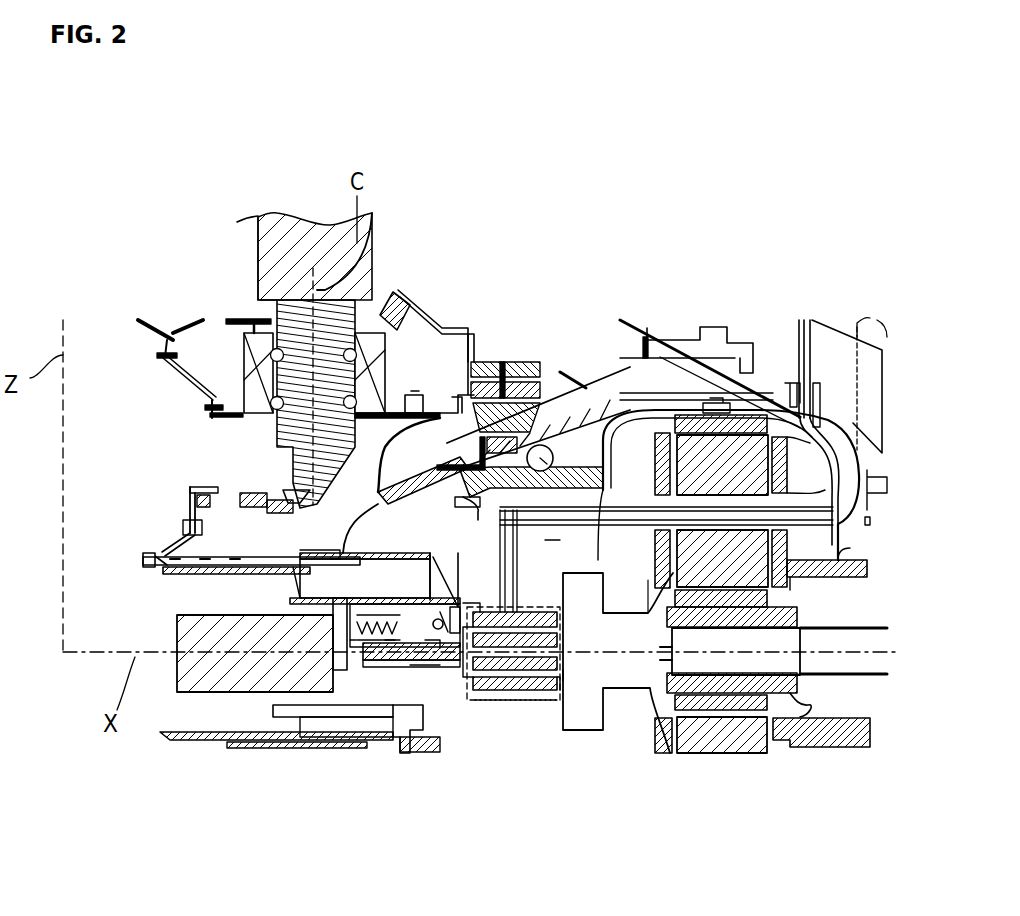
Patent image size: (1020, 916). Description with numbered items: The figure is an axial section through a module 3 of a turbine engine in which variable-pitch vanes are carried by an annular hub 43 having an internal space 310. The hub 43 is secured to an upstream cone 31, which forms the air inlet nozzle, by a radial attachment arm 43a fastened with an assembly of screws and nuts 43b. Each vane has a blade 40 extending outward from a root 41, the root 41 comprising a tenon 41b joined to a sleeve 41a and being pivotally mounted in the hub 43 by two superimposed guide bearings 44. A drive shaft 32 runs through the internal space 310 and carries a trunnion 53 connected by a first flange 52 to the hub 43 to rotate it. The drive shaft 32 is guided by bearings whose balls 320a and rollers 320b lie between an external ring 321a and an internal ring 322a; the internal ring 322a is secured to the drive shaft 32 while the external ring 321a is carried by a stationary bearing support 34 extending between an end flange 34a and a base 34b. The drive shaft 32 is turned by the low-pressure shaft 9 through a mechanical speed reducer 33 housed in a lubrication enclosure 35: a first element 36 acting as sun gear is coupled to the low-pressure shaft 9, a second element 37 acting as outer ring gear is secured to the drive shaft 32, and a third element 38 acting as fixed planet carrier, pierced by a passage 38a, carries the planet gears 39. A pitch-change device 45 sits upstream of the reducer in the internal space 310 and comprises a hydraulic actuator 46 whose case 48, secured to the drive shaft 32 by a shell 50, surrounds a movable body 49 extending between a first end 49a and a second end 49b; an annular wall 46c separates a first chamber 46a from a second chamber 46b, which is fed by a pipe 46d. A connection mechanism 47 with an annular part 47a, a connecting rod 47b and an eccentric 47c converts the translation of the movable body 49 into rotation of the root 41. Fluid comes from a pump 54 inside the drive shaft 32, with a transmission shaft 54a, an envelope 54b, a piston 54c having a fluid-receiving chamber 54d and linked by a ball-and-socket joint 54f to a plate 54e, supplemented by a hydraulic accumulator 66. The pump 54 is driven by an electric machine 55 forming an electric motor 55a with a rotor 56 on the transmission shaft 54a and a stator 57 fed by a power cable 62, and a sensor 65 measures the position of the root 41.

The module 3 is at (123, 178).
The low-pressure shaft 9 is at (868, 660).
The cone 31 is at (177, 331).
The drive shaft 32 is at (472, 500).
The mechanical speed reducer 33 is at (852, 546).
The bearing support 34 is at (620, 345).
The end flange 34a is at (648, 328).
The base 34b is at (547, 440).
The lubrication enclosure 35 is at (632, 421).
The first element 36 is at (807, 703).
The second element 37 is at (697, 393).
The third element 38 is at (850, 572).
The passage 38a is at (792, 505).
The planet gears 39 is at (660, 613).
The blade 40 is at (292, 327).
The root 41 is at (243, 297).
The sleeve 41a is at (247, 373).
The tenon 41b is at (258, 217).
The hub 43 is at (243, 357).
The attachment arm 43a is at (165, 380).
The assembly of screws and nuts 43b is at (158, 355).
The guide bearings 44 is at (388, 395).
The device for changing the pitch 45 is at (146, 536).
The hydraulic actuator 46 is at (439, 569).
The first chamber 46a is at (400, 745).
The second chamber 46b is at (308, 727).
The annular wall 46c is at (275, 577).
The pipe 46d is at (343, 540).
The connection mechanism 47 is at (168, 545).
The annular part 47a is at (187, 512).
The connecting rod 47b is at (243, 492).
The eccentric 47c is at (273, 492).
The case 48 is at (378, 540).
The movable body 49 is at (247, 557).
The first end 49a is at (158, 570).
The second end 49b is at (317, 557).
The shell 50 is at (506, 540).
The first flange 52 is at (420, 397).
The trunnion 53 is at (372, 418).
The pump 54 is at (365, 752).
The transmission shaft 54a is at (423, 668).
The envelope 54b is at (352, 640).
The piston 54c is at (432, 648).
The fluid-receiving chamber 54d is at (390, 640).
The plate 54e is at (482, 605).
The ball-and-socket joint 54f is at (441, 617).
The electric machine 55 is at (533, 708).
The electric motor 55a is at (498, 703).
The rotor 56 is at (562, 672).
The stator 57 is at (543, 690).
The electrical power cable 62 is at (547, 530).
The sensor 65 is at (407, 292).
The hydraulic accumulator 66 is at (190, 652).
The internal space 310 is at (161, 441).
The balls 320a is at (535, 403).
The rollers 320b is at (468, 328).
The external ring 321a is at (502, 362).
The internal ring 322a is at (598, 502).